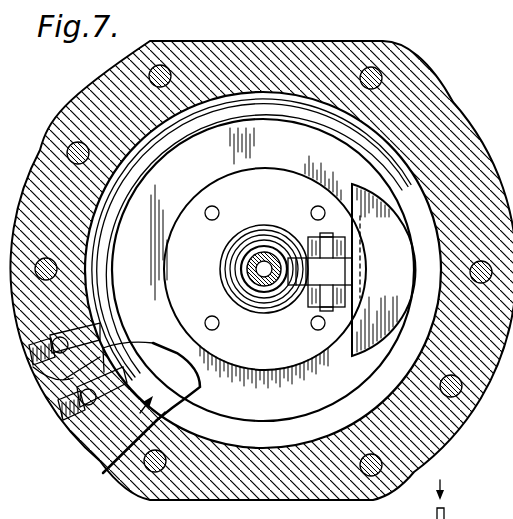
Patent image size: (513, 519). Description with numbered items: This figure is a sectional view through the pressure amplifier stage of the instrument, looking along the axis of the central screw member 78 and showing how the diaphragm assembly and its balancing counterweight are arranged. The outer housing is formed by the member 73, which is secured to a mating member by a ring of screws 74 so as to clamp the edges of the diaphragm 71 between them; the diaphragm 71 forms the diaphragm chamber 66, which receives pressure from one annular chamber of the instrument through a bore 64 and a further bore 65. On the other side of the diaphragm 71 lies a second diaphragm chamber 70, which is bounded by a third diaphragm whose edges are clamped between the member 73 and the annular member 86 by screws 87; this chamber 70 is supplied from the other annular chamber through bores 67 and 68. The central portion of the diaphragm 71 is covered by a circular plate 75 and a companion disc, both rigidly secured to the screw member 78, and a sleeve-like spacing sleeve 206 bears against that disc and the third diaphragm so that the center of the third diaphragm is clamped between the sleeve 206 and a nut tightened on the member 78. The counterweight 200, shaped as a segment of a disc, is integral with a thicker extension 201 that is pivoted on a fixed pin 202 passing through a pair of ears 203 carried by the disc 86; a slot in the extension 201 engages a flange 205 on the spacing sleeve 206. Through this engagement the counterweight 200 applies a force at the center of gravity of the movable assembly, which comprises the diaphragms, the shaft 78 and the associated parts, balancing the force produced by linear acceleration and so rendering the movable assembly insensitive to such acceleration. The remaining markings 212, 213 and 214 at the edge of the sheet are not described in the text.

The bore 64 is at (70, 434).
The bore 65 is at (104, 370).
The diaphragm chamber 66 is at (108, 466).
The bore 67 is at (50, 385).
The bore 68 is at (118, 312).
The diaphragm chamber 70 is at (274, 128).
The diaphragm 71 is at (166, 413).
The member 73 is at (462, 137).
The screws 74 is at (149, 77).
The circular plate 75 is at (162, 350).
The screw member 78 is at (265, 252).
The annular member 86 is at (283, 180).
The screws 87 is at (211, 205).
The counterweight 200 is at (412, 255).
The thicker extension 201 is at (311, 308).
The pin 202 is at (346, 236).
The ears 203 is at (352, 268).
The flange 205 is at (265, 313).
The spacing sleeve 206 is at (240, 273).
The arrow 212 is at (456, 491).
The element 213 is at (420, 512).
The element 214 is at (474, 512).